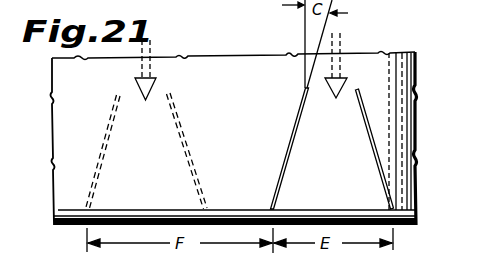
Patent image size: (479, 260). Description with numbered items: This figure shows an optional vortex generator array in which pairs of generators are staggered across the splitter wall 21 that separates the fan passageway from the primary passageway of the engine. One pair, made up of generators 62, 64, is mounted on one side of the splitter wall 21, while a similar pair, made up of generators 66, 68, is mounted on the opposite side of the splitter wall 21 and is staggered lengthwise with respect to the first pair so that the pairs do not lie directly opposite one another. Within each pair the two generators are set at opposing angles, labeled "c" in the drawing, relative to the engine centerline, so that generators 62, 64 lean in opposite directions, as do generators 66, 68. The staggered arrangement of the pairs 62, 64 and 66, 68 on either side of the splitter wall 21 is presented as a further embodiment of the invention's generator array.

The splitter wall 21 is at (417, 112).
The generator 62 is at (364, 107).
The generator 64 is at (295, 116).
The generator 66 is at (180, 123).
The generator 68 is at (110, 125).